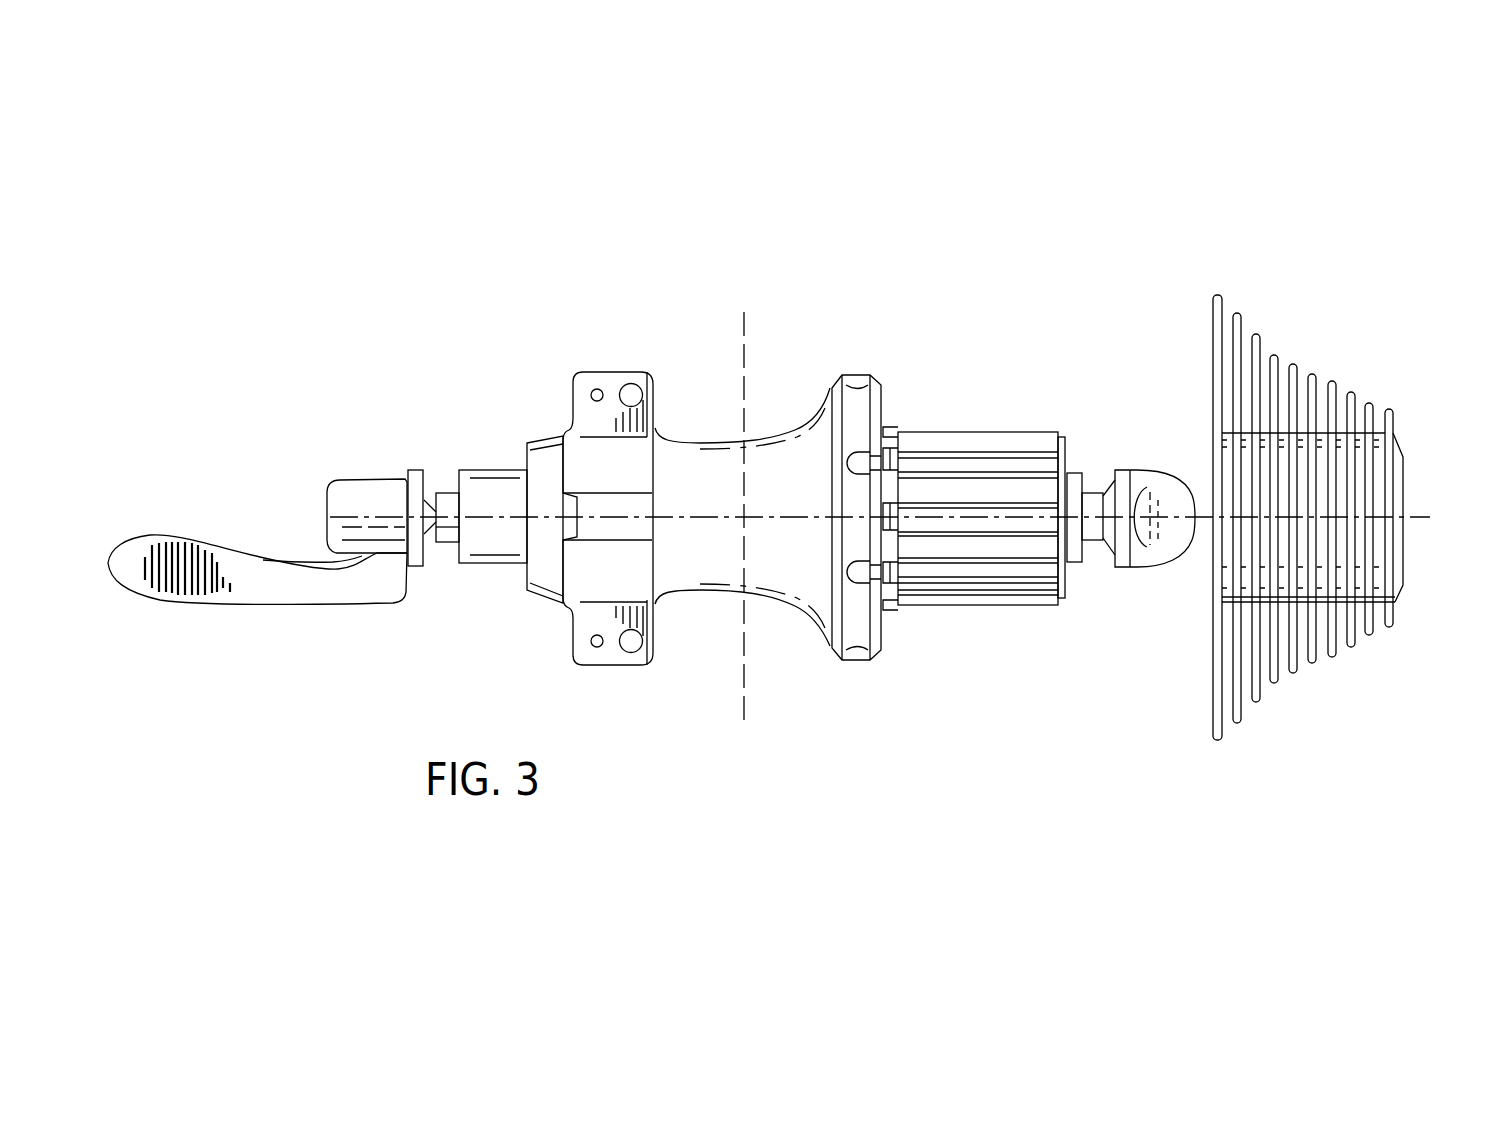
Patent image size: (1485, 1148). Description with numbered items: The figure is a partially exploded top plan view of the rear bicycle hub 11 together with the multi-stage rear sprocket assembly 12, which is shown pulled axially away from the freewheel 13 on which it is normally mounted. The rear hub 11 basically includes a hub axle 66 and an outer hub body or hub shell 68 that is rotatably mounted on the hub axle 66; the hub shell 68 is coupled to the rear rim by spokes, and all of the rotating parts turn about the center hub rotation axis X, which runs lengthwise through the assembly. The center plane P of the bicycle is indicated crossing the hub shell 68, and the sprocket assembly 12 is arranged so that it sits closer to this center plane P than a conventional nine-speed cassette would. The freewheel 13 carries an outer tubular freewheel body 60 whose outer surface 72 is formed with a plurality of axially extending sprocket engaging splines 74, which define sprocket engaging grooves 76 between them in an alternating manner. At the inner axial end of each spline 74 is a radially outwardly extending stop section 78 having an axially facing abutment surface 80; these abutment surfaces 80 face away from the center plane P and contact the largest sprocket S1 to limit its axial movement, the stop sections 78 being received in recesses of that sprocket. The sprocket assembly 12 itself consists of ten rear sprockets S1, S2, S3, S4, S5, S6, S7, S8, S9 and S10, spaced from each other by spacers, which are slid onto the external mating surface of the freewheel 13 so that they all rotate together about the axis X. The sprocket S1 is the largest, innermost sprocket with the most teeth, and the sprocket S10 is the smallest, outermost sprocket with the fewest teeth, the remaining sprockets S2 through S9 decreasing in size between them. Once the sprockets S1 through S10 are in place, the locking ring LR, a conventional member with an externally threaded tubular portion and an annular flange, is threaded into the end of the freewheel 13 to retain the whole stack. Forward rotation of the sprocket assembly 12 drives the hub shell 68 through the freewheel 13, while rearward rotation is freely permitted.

The rear bicycle hub 11 is at (905, 252).
The rear sprocket assembly 12 is at (1392, 385).
The freewheel 13 is at (988, 380).
The outer tubular freewheel body 60 is at (952, 422).
The hub axle 66 is at (443, 550).
The hub shell 68 is at (699, 438).
The outer surface 72 is at (978, 529).
The sprocket engaging splines 74 is at (1037, 545).
The sprocket engaging grooves 76 is at (1003, 513).
The stop section 78 is at (890, 488).
The abutment surface 80 is at (900, 545).
The center hub rotation axis X is at (481, 515).
The center plane P is at (745, 327).
The locking ring LR is at (1410, 443).
The sprocket S1 is at (1222, 735).
The sprocket S2 is at (1241, 317).
The sprocket S3 is at (1260, 698).
The sprocket S4 is at (1278, 358).
The sprocket S5 is at (1297, 668).
The sprocket S6 is at (1316, 380).
The sprocket S7 is at (1336, 653).
The sprocket S8 is at (1355, 398).
The sprocket S9 is at (1373, 630).
The sprocket S10 is at (1395, 620).